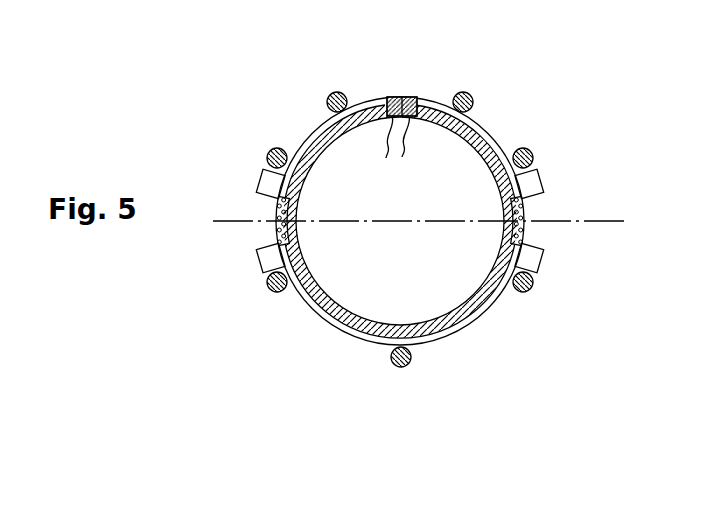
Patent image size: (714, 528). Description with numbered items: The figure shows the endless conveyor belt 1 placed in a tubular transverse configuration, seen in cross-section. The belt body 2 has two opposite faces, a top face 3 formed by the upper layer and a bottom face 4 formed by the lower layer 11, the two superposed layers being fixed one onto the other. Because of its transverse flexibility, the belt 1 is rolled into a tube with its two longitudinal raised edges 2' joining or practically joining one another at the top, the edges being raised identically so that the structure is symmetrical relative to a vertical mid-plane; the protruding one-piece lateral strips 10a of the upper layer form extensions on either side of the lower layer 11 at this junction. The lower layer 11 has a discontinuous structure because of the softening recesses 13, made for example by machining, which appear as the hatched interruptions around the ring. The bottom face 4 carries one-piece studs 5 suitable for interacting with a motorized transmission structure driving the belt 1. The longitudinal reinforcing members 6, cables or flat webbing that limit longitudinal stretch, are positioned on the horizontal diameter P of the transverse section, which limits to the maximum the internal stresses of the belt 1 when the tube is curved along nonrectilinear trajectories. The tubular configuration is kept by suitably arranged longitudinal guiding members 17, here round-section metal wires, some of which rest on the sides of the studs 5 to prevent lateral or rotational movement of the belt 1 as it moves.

The conveyor belt 1 is at (273, 108).
The belt body 2 is at (410, 218).
The raised edges 2' is at (403, 149).
The top face 3 is at (352, 302).
The bottom face 4 is at (333, 329).
The studs 5 is at (260, 180).
The longitudinal reinforcing members 6 is at (276, 229).
The lateral strips 10a is at (412, 95).
The lower layer 11 is at (484, 128).
The softening recesses 13 is at (320, 127).
The longitudinal guiding members 17 is at (338, 92).
The horizontal diameter P is at (227, 221).